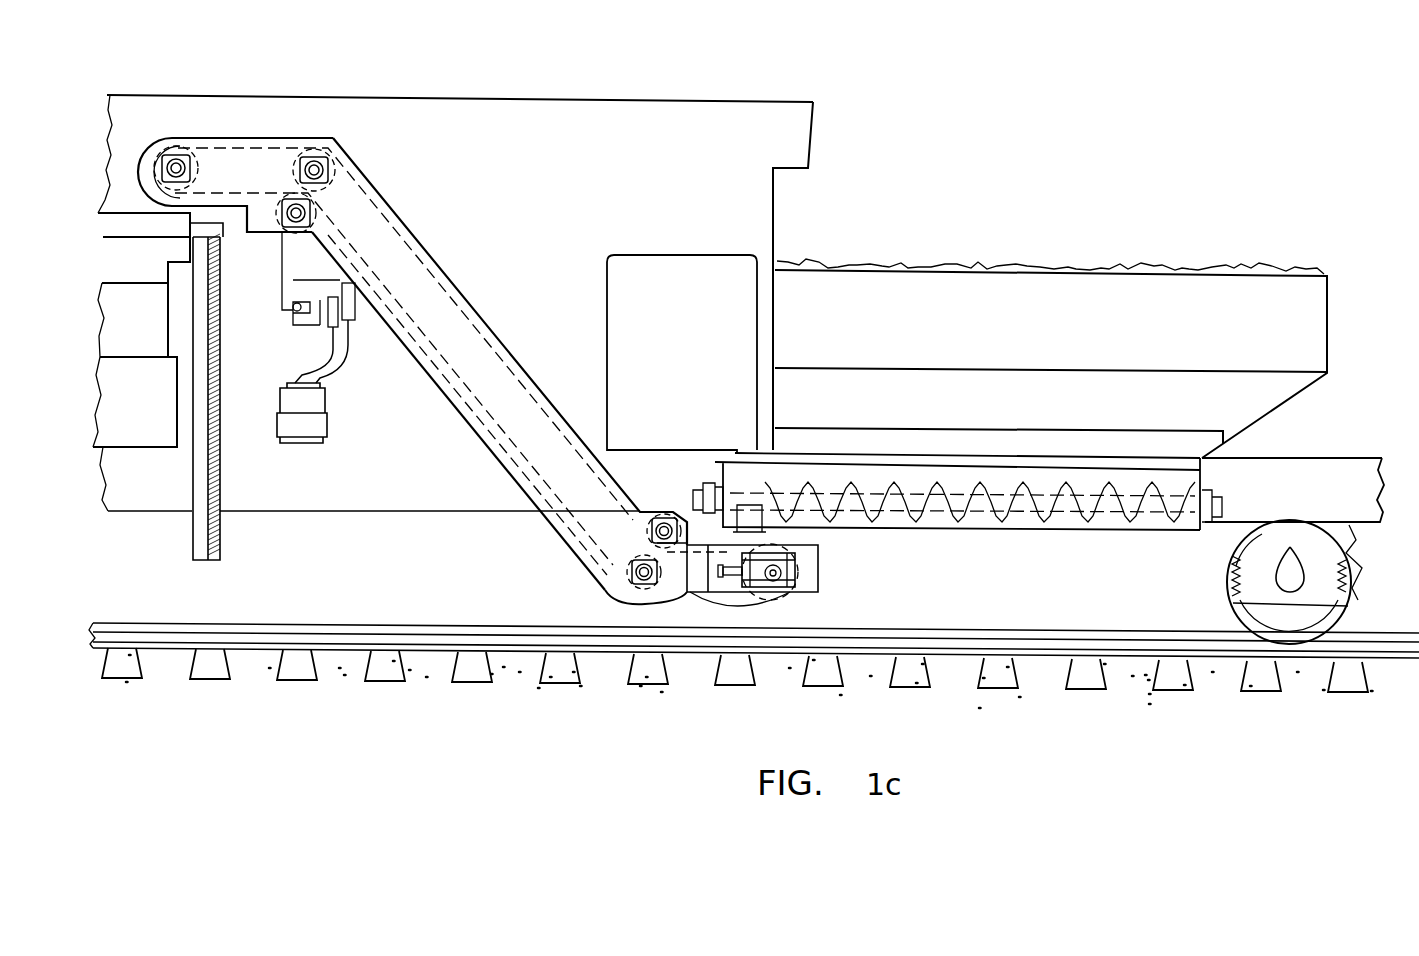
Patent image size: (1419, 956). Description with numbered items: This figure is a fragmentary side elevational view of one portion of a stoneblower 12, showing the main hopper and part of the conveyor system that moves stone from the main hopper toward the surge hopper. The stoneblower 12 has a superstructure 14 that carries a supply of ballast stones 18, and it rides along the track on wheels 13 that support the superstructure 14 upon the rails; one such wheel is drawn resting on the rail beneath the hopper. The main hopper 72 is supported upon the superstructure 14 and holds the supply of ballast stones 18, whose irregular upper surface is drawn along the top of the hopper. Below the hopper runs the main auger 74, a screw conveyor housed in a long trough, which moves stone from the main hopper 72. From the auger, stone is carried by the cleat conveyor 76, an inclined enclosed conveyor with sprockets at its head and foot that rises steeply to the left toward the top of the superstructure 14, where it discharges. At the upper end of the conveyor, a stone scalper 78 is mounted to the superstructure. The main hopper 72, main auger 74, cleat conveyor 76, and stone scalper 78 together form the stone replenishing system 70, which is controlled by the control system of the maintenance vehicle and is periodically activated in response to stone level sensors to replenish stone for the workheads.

The stoneblower 12 is at (718, 86).
The superstructure 14 is at (766, 101).
The stone replenishing system 70 is at (478, 337).
The cleat conveyor 76 is at (506, 475).
The stone scalper 78 is at (137, 451).
The ballast stones 18 is at (1175, 259).
The main hopper 72 is at (1333, 333).
The main auger 74 is at (1027, 531).
The wheels 13 is at (1226, 566).